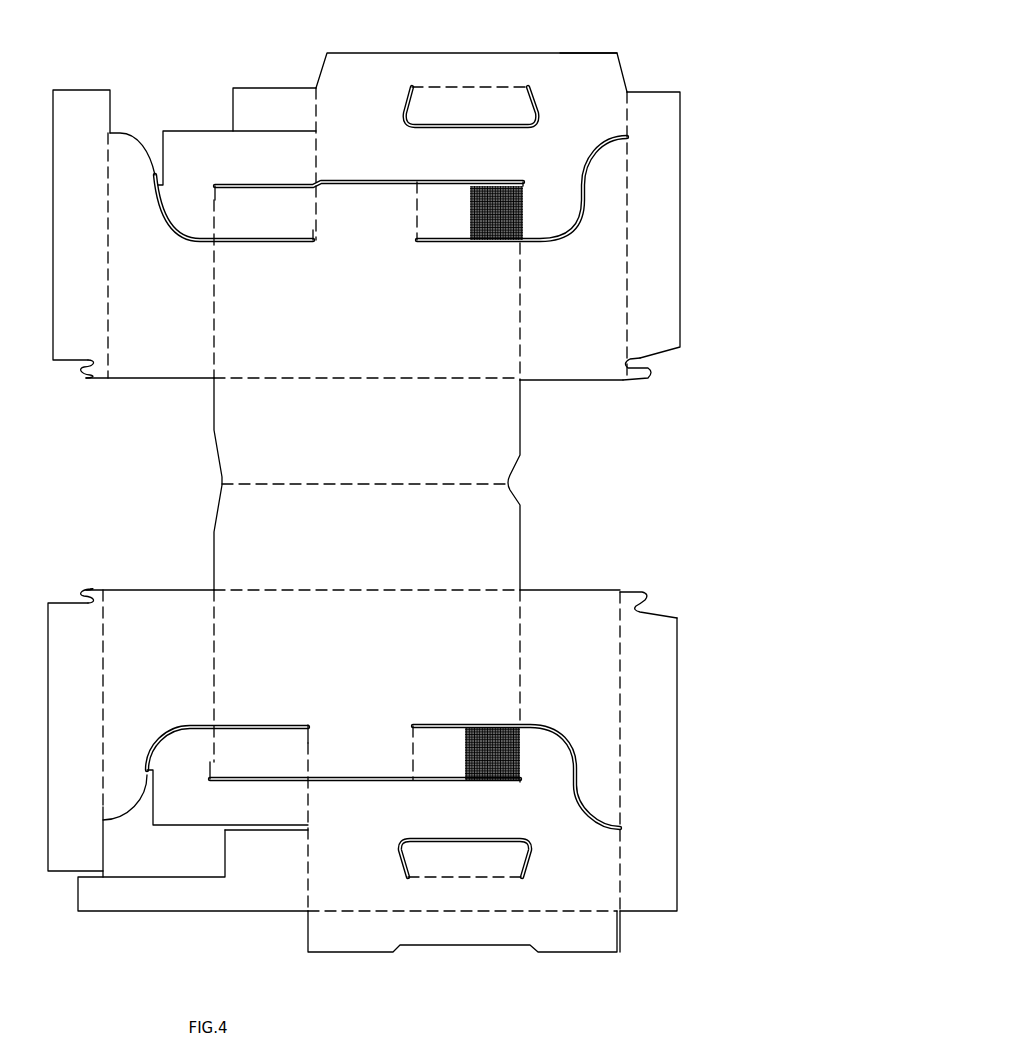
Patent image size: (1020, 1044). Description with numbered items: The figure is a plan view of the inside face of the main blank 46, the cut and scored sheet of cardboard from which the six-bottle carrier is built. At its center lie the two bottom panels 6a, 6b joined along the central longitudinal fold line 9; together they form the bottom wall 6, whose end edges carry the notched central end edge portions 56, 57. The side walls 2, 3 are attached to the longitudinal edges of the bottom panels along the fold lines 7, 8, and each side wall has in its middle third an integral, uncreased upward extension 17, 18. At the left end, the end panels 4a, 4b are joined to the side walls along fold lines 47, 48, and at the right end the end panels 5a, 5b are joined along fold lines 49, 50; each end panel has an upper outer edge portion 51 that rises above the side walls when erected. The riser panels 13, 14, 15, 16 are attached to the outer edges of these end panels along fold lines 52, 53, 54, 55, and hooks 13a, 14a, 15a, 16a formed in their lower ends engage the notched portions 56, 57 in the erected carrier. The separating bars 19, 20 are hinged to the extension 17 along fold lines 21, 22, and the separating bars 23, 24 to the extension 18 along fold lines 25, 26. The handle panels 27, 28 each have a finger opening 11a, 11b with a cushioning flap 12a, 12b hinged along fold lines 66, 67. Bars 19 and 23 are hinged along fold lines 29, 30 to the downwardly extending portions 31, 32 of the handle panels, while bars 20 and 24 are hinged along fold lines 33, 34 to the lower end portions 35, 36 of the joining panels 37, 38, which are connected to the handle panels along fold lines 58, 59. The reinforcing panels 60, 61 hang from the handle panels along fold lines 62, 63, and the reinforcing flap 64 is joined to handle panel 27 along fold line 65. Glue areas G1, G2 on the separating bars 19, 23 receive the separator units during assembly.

The side wall 2 is at (414, 662).
The side wall 3 is at (386, 335).
The end panel 4a is at (150, 600).
The end panel 4b is at (156, 360).
The end panel 5a is at (587, 598).
The end panel 5b is at (583, 382).
The bottom wall 6 is at (525, 456).
The bottom panel 6a is at (370, 570).
The bottom panel 6b is at (374, 428).
The fold line 7 is at (412, 590).
The fold line 8 is at (455, 383).
The fold line 9 is at (453, 487).
The finger opening 11a is at (508, 838).
The finger opening 11b is at (477, 127).
The cushioning flap 12a is at (455, 865).
The cushioning flap 12b is at (503, 105).
The riser panel 13 is at (67, 732).
The hook 13a is at (88, 590).
The riser panel 14 is at (74, 210).
The hook 14a is at (90, 373).
The riser panel 15 is at (640, 727).
The hook 15a is at (646, 593).
The riser panel 16 is at (644, 240).
The hook 16a is at (640, 380).
The upward extension 17 is at (370, 772).
The upward extension 18 is at (364, 240).
The separating bar 19 is at (440, 745).
The separating bar 20 is at (287, 740).
The fold line 21 is at (413, 745).
The fold line 22 is at (310, 742).
The separating bar 23 is at (438, 230).
The separating bar 24 is at (289, 230).
The fold line 25 is at (417, 217).
The fold line 26 is at (318, 220).
The handle panel 27 is at (580, 885).
The handle panel 28 is at (575, 127).
The fold line 29 is at (522, 757).
The fold line 30 is at (522, 211).
The downwardly extending portion 31 is at (560, 760).
The downwardly extending portion 32 is at (557, 218).
The fold line 33 is at (207, 762).
The fold line 34 is at (214, 211).
The lower end portion 35 is at (170, 735).
The lower end portion 36 is at (178, 208).
The joining panel 37 is at (155, 790).
The joining panel 38 is at (195, 157).
The blank 46 is at (621, 52).
The fold line 47 is at (214, 655).
The fold line 48 is at (214, 315).
The fold line 49 is at (520, 627).
The fold line 50 is at (522, 328).
The upper outer edge portion 51 is at (127, 150).
The fold line 52 is at (103, 655).
The fold line 53 is at (108, 280).
The fold line 54 is at (620, 698).
The fold line 55 is at (624, 313).
The notched central end edge portion 56 is at (215, 478).
The notched central end edge portion 57 is at (514, 483).
The fold line 58 is at (312, 808).
The fold line 59 is at (316, 149).
The reinforcing panel 60 is at (233, 910).
The reinforcing panel 61 is at (272, 100).
The fold line 62 is at (308, 873).
The fold line 63 is at (316, 111).
The reinforcing flap 64 is at (375, 940).
The fold line 65 is at (525, 911).
The fold line 66 is at (478, 877).
The fold line 67 is at (473, 87).
The glue area G1 is at (492, 782).
The glue area G2 is at (517, 183).